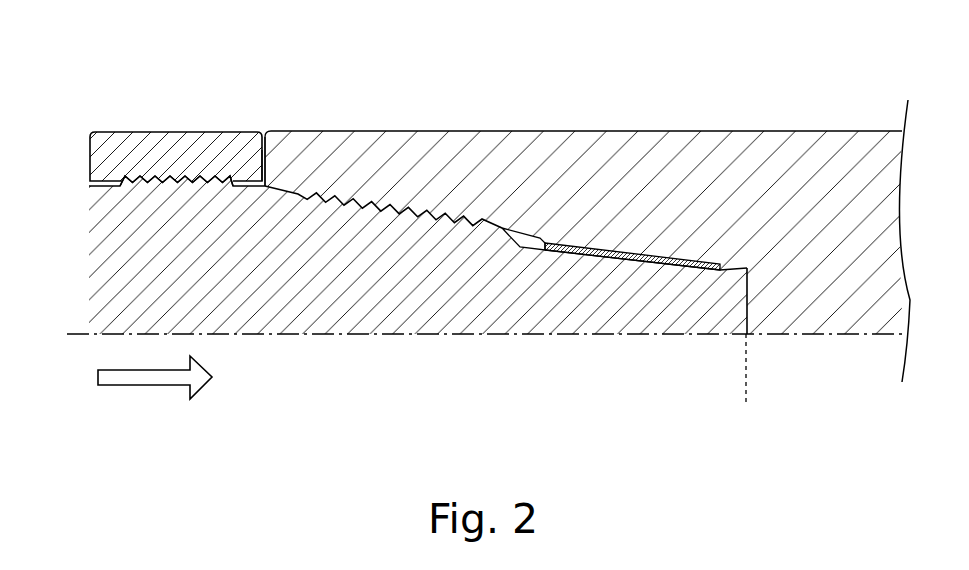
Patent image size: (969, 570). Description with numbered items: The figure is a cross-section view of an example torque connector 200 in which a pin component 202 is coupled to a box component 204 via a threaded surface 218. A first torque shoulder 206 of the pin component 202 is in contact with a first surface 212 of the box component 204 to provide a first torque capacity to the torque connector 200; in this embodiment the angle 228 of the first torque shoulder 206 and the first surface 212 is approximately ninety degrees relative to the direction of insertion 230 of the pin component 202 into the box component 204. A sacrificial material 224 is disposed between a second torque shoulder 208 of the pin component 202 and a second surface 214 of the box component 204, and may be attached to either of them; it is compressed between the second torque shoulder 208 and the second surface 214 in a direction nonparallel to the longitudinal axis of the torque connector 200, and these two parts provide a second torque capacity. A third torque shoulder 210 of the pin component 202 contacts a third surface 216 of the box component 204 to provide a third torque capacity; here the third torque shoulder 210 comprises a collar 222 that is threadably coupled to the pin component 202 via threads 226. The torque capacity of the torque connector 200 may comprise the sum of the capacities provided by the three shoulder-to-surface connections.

The torque connector 200 is at (800, 63).
The pin component 202 is at (122, 296).
The box component 204 is at (669, 142).
The first torque shoulder 206 is at (750, 281).
The second torque shoulder 208 is at (631, 262).
The third torque shoulder 210 is at (266, 148).
The first surface 212 is at (745, 316).
The second surface 214 is at (604, 246).
The third surface 216 is at (262, 160).
The threaded surface 218 is at (380, 206).
The collar 222 is at (112, 142).
The sacrificial material 224 is at (563, 242).
The threads 226 is at (126, 185).
The angle 228 is at (750, 371).
The direction of insertion 230 is at (155, 388).